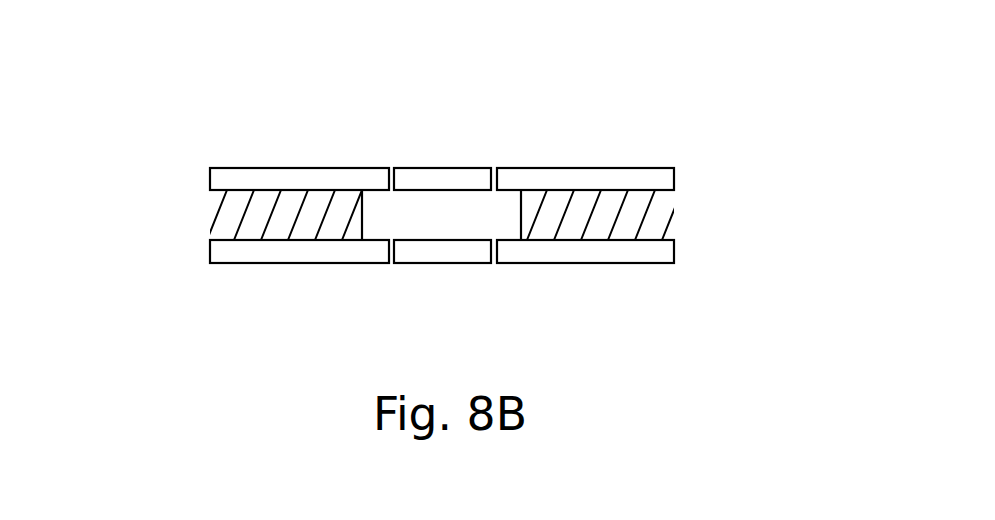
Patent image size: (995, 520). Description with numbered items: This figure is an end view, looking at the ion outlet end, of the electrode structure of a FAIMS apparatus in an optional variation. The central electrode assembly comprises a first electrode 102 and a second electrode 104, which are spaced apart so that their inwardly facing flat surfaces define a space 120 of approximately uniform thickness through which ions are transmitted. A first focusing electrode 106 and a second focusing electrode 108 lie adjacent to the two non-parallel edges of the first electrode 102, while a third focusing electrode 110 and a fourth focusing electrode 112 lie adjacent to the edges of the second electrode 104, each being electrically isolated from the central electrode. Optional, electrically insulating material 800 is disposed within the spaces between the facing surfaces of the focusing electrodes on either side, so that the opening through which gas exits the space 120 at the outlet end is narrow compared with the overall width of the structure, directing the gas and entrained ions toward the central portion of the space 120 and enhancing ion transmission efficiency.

The first electrode 102 is at (450, 167).
The second electrode 104 is at (465, 263).
The first focusing electrode 106 is at (295, 167).
The second focusing electrode 108 is at (597, 167).
The third focusing electrode 110 is at (260, 263).
The fourth focusing electrode 112 is at (625, 265).
The space 120 is at (463, 222).
The electrically insulating material 800 is at (210, 207).